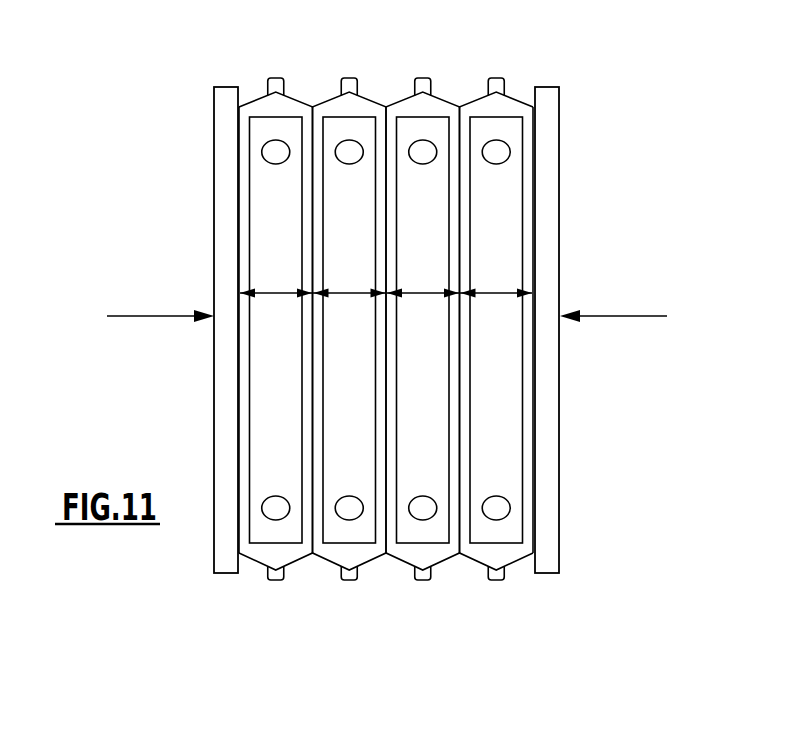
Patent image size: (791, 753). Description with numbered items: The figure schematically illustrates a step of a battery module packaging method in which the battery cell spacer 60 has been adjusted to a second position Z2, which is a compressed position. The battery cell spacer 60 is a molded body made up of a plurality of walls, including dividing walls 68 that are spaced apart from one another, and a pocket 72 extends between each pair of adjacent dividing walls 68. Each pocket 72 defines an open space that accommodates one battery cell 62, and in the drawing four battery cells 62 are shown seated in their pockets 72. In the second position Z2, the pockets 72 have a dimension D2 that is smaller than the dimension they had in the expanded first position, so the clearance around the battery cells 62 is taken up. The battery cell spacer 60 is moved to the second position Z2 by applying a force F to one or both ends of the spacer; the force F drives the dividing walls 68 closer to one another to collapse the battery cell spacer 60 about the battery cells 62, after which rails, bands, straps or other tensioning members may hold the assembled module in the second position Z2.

The battery cell spacer 60 is at (501, 66).
The battery cell 62 is at (290, 234).
The dividing wall 68 is at (313, 554).
The pocket 72 is at (287, 108).
The dimension D2 is at (270, 296).
The second position Z2 is at (417, 36).
The force F is at (152, 318).